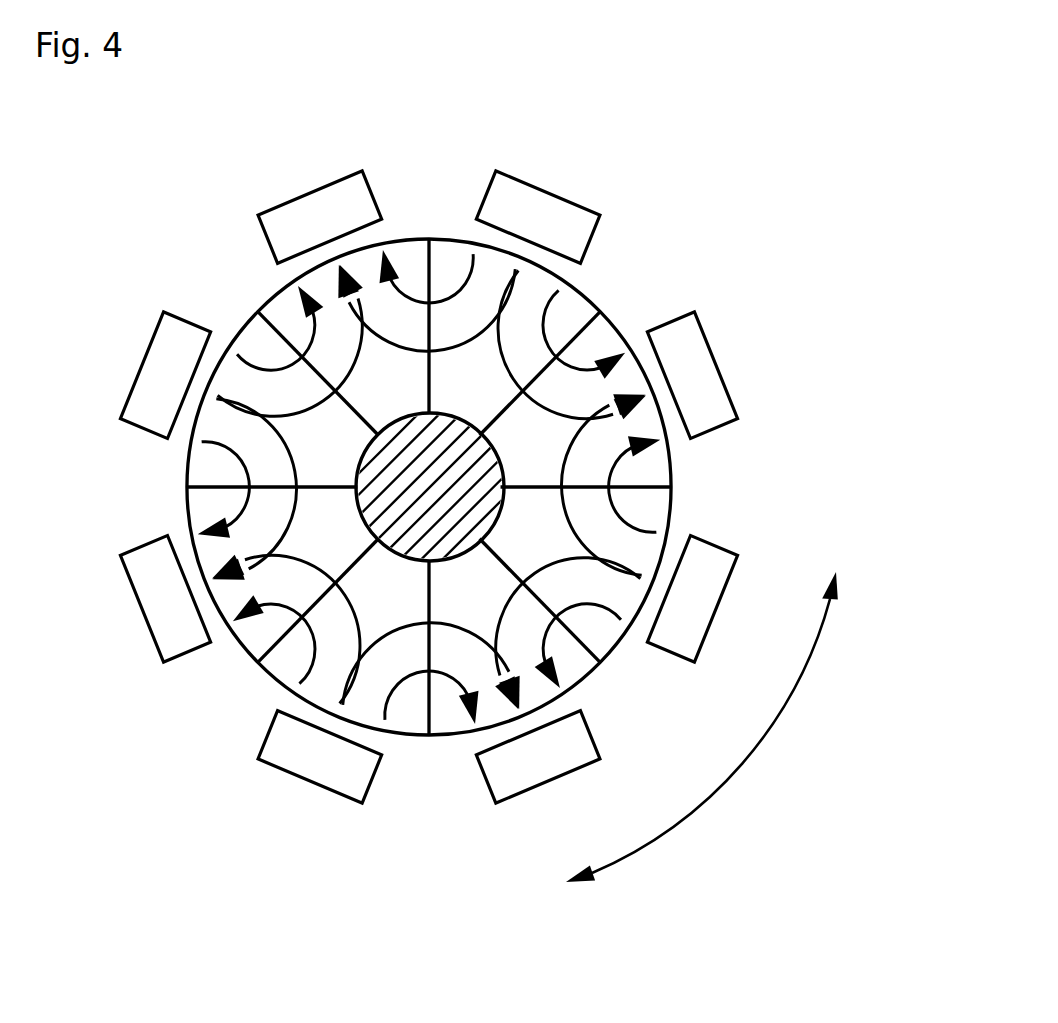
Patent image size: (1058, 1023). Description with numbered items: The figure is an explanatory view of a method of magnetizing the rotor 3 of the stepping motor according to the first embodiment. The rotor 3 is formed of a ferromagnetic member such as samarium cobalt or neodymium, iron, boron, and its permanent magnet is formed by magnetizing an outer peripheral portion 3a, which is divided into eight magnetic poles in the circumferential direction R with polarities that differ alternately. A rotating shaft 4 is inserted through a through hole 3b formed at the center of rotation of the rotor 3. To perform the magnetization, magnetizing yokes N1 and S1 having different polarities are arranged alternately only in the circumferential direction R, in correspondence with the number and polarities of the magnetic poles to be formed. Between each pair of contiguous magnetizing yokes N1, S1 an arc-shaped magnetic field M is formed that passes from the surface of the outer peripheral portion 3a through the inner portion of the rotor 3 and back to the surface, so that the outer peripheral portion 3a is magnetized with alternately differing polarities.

The rotor 3 is at (676, 256).
The outer peripheral portion 3a is at (243, 346).
The through hole 3b is at (360, 466).
The rotating shaft 4 is at (356, 520).
The magnetizing yoke S1 is at (718, 367).
The magnetizing yoke N1 is at (737, 573).
The magnetic field M is at (638, 527).
The circumferential direction R is at (773, 723).